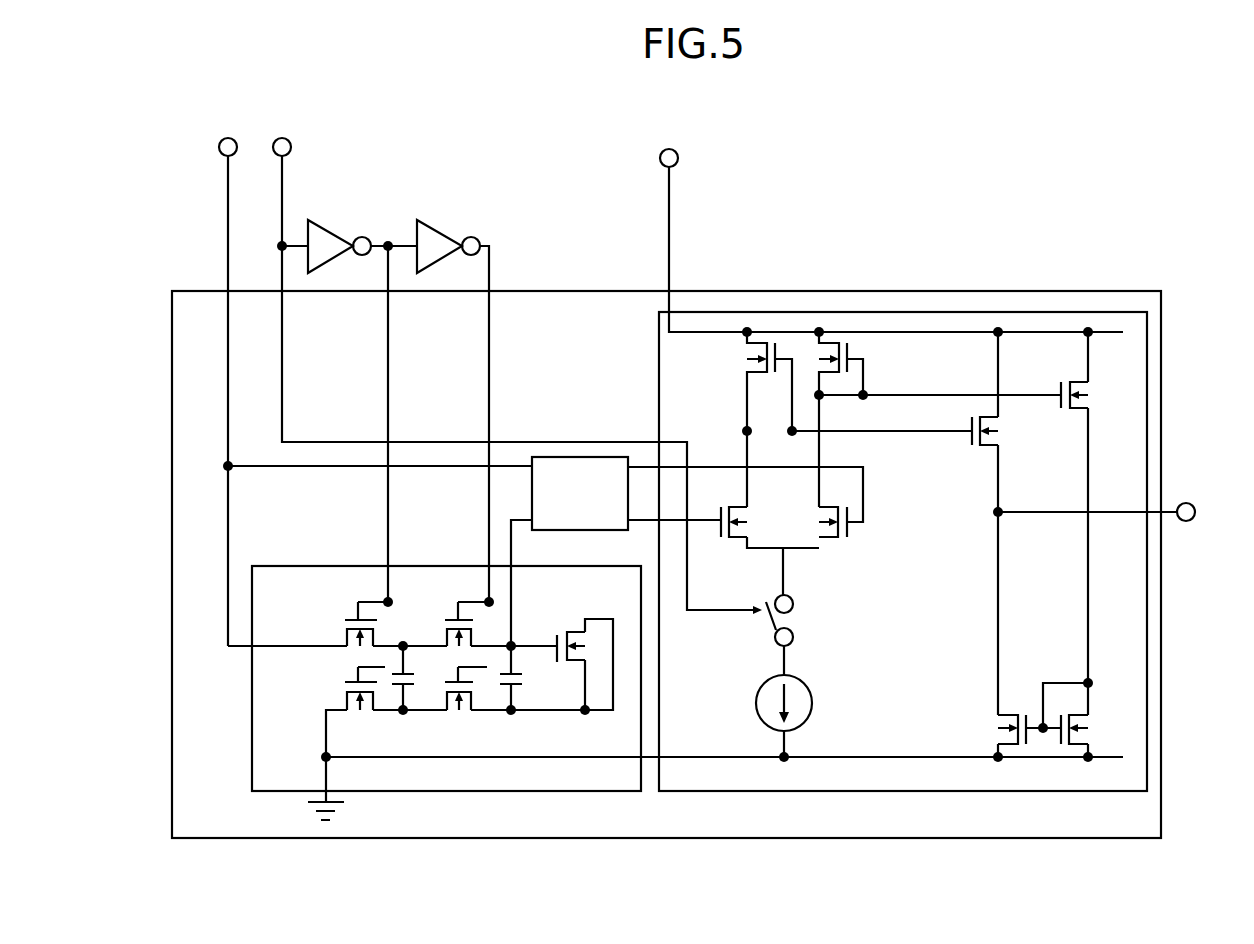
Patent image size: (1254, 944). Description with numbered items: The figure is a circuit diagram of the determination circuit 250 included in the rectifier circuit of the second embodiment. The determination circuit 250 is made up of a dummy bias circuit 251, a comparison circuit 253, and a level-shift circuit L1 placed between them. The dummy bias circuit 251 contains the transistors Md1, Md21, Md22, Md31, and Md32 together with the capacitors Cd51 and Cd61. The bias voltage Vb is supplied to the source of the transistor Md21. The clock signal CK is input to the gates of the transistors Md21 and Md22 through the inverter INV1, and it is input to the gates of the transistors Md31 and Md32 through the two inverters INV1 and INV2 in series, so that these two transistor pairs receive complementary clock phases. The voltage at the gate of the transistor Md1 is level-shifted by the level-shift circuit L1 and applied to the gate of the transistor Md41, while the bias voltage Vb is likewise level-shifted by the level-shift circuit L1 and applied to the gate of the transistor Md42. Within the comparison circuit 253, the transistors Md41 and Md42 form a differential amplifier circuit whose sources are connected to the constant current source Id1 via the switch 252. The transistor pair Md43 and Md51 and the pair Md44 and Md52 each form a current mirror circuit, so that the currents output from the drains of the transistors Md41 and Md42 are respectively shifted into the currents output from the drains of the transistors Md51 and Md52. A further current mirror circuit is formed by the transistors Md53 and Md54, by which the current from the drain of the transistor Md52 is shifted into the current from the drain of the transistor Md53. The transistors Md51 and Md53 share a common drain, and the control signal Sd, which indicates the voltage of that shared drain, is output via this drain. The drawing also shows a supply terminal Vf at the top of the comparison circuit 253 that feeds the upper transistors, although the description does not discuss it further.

The determination circuit 250 is at (1045, 840).
The dummy bias circuit 251 is at (577, 792).
The switch 252 is at (757, 622).
The comparison circuit 253 is at (943, 792).
The level-shift circuit L1 is at (580, 531).
The inverter INV1 is at (331, 224).
The inverter INV2 is at (440, 224).
The transistor Md21 is at (343, 622).
The transistor Md22 is at (343, 686).
The transistor Md31 is at (445, 623).
The transistor Md32 is at (462, 712).
The capacitor Cd51 is at (437, 676).
The capacitor Cd61 is at (525, 680).
The transistor Md1 is at (567, 629).
The transistor Md41 is at (717, 513).
The transistor Md42 is at (845, 540).
The transistor Md43 is at (740, 359).
The transistor Md44 is at (862, 350).
The transistor Md51 is at (1005, 433).
The transistor Md52 is at (1092, 393).
The transistor Md53 is at (988, 723).
The transistor Md54 is at (1117, 725).
The constant current source Id1 is at (805, 680).
The bias voltage Vb is at (375, 379).
The clock signal CK is at (516, 363).
The supply voltage terminal Vf is at (891, 226).
The control signal Sd is at (1095, 499).